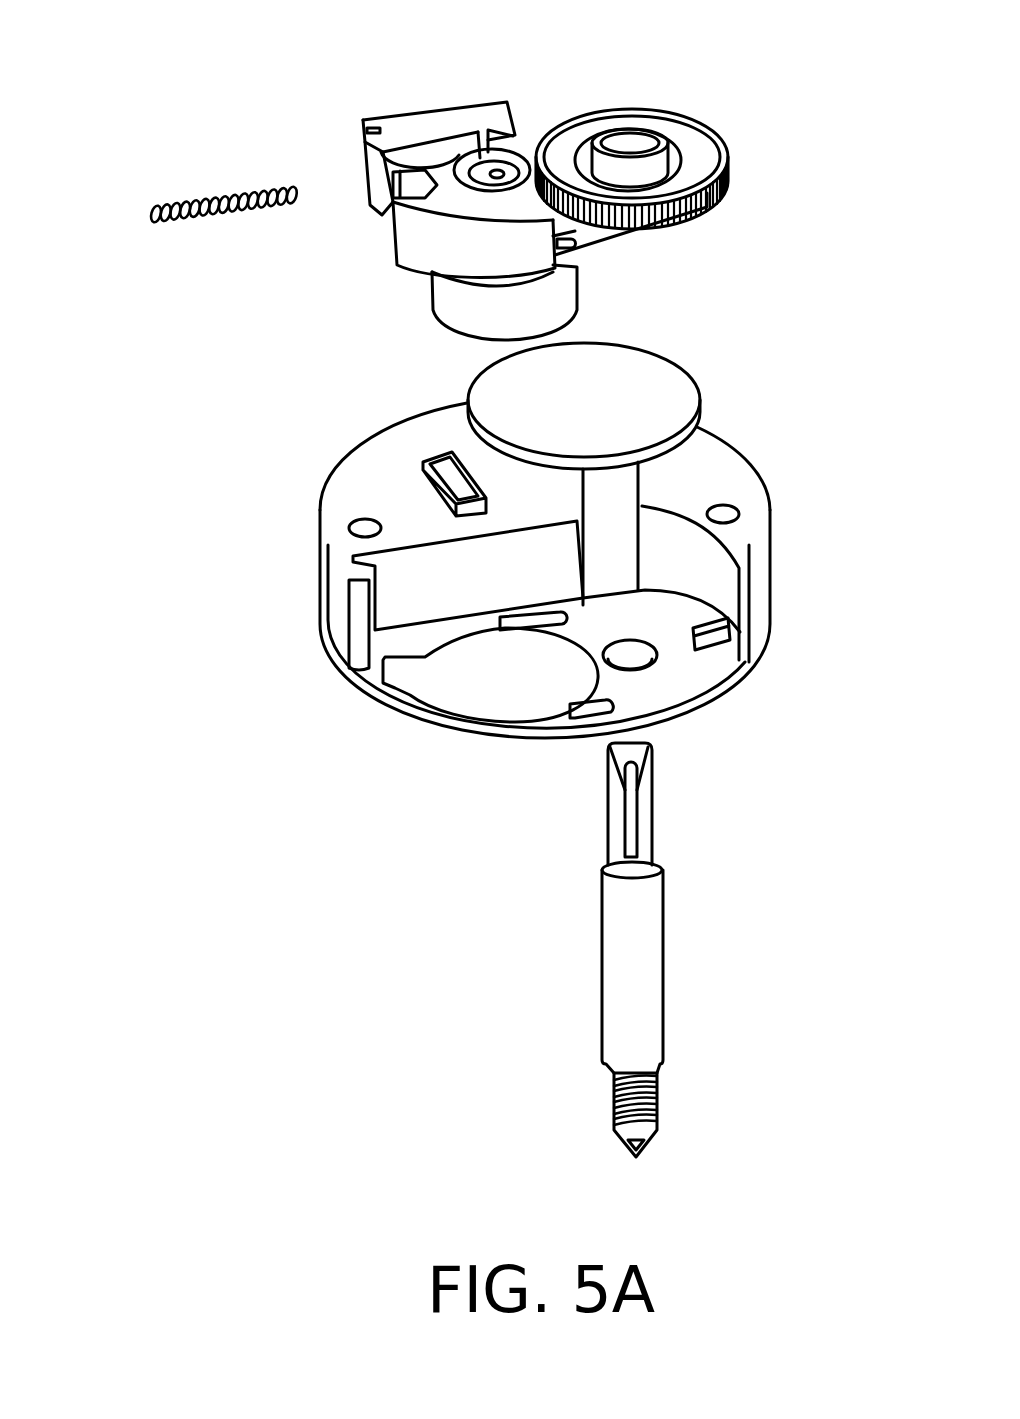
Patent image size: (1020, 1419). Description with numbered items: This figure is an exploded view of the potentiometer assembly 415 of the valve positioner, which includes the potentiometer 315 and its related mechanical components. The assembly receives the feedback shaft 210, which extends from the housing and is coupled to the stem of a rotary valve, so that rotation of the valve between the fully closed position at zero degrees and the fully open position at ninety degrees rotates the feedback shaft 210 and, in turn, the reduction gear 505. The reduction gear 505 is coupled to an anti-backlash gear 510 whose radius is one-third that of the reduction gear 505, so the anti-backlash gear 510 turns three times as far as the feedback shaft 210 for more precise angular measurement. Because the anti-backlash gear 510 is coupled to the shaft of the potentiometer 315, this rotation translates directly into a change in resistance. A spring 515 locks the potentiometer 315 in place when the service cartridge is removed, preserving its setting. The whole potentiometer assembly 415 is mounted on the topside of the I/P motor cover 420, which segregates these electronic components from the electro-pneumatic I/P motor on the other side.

The spring 515 is at (152, 213).
The anti-backlash gear 510 is at (496, 170).
The potentiometer assembly 415 is at (527, 133).
The reduction gear 505 is at (730, 167).
The potentiometer 315 is at (568, 302).
The I/P motor cover 420 is at (754, 510).
The feedback shaft 210 is at (645, 960).